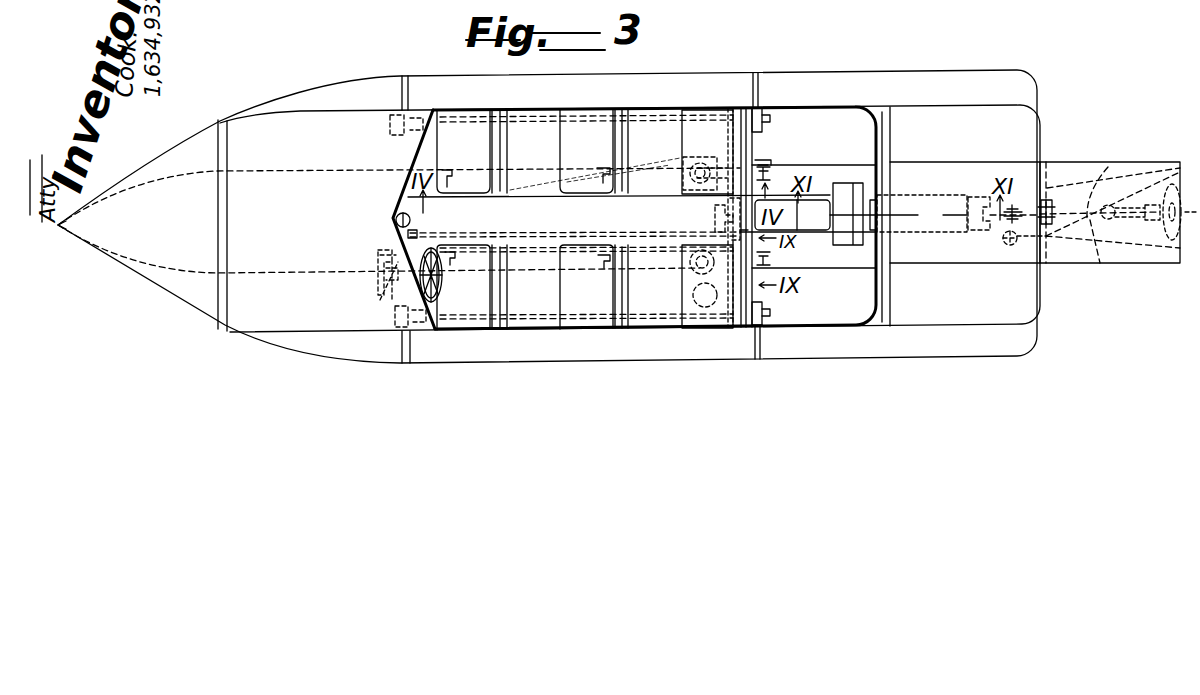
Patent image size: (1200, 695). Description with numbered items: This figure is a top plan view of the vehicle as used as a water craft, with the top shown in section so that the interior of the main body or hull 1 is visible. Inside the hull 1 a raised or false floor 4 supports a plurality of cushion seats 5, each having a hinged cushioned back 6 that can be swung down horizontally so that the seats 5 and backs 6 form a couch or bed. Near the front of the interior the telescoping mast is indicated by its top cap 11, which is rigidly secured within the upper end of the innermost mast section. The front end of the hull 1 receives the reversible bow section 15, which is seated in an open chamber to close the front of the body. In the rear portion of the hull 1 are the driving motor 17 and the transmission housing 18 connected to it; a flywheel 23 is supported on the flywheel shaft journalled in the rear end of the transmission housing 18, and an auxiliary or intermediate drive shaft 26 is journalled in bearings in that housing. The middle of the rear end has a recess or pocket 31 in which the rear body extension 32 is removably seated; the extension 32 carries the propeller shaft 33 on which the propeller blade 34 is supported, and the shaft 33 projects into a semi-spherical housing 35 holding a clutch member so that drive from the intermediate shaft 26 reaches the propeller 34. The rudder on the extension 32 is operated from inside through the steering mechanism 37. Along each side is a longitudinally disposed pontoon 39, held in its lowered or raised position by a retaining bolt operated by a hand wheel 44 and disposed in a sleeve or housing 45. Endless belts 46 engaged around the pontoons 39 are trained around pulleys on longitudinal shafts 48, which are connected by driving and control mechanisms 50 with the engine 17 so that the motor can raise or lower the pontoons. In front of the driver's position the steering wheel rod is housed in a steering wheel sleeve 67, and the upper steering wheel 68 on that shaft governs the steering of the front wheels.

The main body or hull 1 is at (272, 130).
The raised or false floor 4 is at (332, 0).
The cushion seat 5 is at (458, 137).
The hinged cushioned back 6 is at (617, 126).
The top cap 11 is at (396, 220).
The reversible front end section or bow section 15 is at (194, 208).
The driving motor 17 is at (815, 216).
The transmission housing 18 is at (922, 218).
The flywheel 23 is at (982, 193).
The auxiliary or intermediate drive shaft 26 is at (998, 226).
The recess or pocket 31 is at (936, 142).
The rear body extension 32 is at (1077, 171).
The propeller shaft 33 is at (1117, 161).
The propeller blade 34 is at (1158, 182).
The semi-spherical housing 35 is at (1048, 208).
The steering mechanism 37 is at (1092, 226).
The pontoon 39 is at (683, 92).
The hand wheel 44 is at (758, 168).
The sleeve or housing 45 is at (768, 268).
The endless belt 46 is at (406, 82).
The shaft 48 is at (546, 126).
The driving and control mechanisms 50 is at (722, 221).
The steering wheel sleeve 67 is at (393, 302).
The upper steering wheel 68 is at (524, 287).